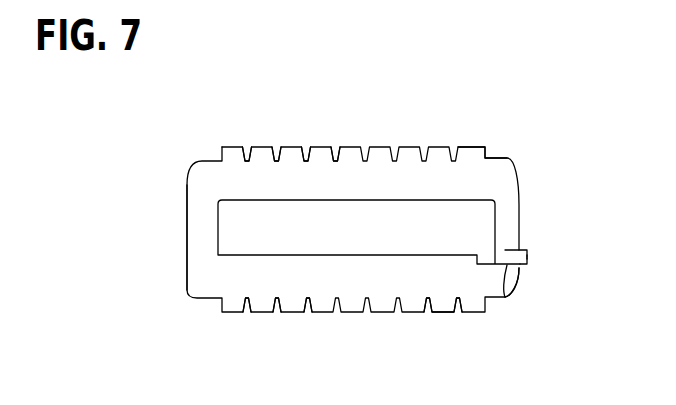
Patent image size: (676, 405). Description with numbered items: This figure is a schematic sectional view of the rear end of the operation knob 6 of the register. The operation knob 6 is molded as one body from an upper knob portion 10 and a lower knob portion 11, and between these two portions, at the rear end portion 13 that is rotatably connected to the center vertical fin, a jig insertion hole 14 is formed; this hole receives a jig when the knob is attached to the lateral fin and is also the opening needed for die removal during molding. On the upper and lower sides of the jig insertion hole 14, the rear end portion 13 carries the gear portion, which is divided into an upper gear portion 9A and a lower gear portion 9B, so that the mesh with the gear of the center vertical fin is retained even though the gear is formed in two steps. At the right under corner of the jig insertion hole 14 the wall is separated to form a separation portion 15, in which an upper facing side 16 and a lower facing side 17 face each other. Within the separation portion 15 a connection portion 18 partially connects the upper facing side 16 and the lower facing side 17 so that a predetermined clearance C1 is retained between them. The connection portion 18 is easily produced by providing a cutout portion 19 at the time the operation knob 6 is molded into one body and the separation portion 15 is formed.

The operation knob 6 is at (289, 107).
The upper gear portion 9A is at (355, 137).
The lower gear portion 9B is at (320, 321).
The upper knob portion 10 is at (473, 165).
The lower knob portion 11 is at (445, 292).
The rear end portion 13 is at (200, 229).
The jig insertion hole 14 is at (393, 238).
The clearance C1 is at (504, 252).
The upper facing side 16 is at (524, 245).
The cutout portion 19 is at (530, 248).
The separation portion 15 is at (530, 265).
The lower facing side 17 is at (524, 270).
The connection portion 18 is at (505, 299).